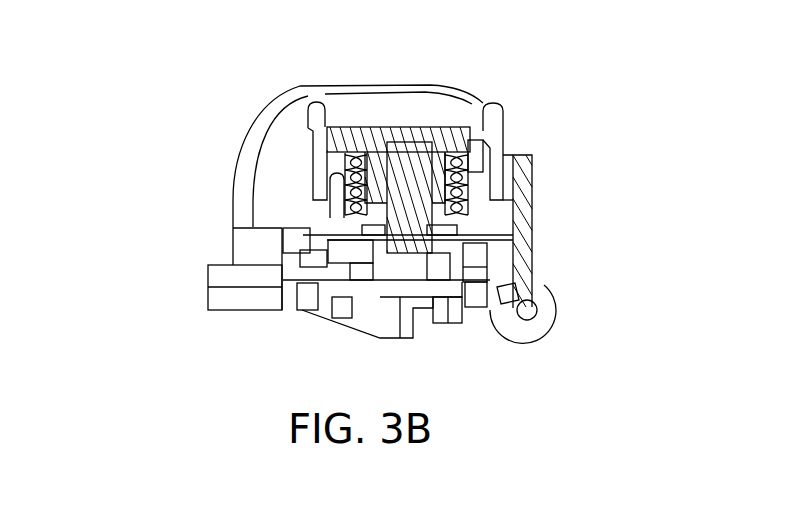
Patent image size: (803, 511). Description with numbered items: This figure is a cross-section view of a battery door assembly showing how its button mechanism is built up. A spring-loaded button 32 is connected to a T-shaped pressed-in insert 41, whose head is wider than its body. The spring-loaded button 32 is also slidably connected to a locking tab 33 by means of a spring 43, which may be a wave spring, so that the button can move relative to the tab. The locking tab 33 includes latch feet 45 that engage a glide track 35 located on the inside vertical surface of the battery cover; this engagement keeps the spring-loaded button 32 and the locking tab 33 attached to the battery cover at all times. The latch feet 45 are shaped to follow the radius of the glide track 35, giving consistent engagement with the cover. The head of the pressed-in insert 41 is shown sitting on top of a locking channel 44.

The spring-loaded button 32 is at (470, 100).
The locking tab 33 is at (337, 193).
The glide track 35 is at (300, 265).
The pressed-in insert 41 is at (410, 167).
The spring 43 is at (337, 157).
The locking channel 44 is at (387, 275).
The latch feet 45 is at (312, 258).